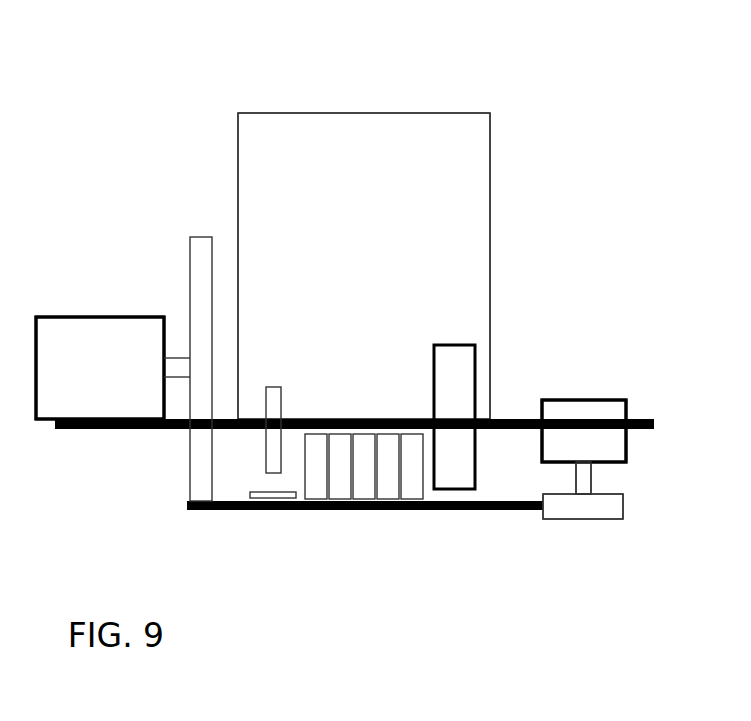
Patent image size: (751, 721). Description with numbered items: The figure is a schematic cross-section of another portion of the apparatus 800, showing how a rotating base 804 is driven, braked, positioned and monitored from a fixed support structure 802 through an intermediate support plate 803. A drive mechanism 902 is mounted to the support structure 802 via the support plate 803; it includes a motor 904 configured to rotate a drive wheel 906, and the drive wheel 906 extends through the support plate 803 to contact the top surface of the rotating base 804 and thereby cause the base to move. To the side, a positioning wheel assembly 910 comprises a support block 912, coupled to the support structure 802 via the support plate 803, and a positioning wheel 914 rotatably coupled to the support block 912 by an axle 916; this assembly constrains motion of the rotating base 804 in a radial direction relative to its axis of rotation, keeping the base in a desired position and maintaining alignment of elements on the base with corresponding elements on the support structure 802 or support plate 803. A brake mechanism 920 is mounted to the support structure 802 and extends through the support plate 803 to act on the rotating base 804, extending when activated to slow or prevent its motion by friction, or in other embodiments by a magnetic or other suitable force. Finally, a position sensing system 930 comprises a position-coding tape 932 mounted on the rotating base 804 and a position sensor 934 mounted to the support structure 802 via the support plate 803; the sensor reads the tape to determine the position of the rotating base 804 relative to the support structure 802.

The apparatus 800 is at (214, 80).
The support structure 802 is at (441, 113).
The support plate 803 is at (504, 420).
The rotating base 804 is at (378, 512).
The drive mechanism 902 is at (90, 275).
The motor 904 is at (80, 385).
The drive wheel 906 is at (201, 237).
The positioning wheel assembly 910 is at (636, 360).
The support block 912 is at (563, 400).
The positioning wheel 914 is at (624, 507).
The axle 916 is at (590, 485).
The brake mechanism 920 is at (447, 345).
The position sensing system 930 is at (228, 464).
The position-coding tape 932 is at (261, 490).
The position sensor 934 is at (274, 387).